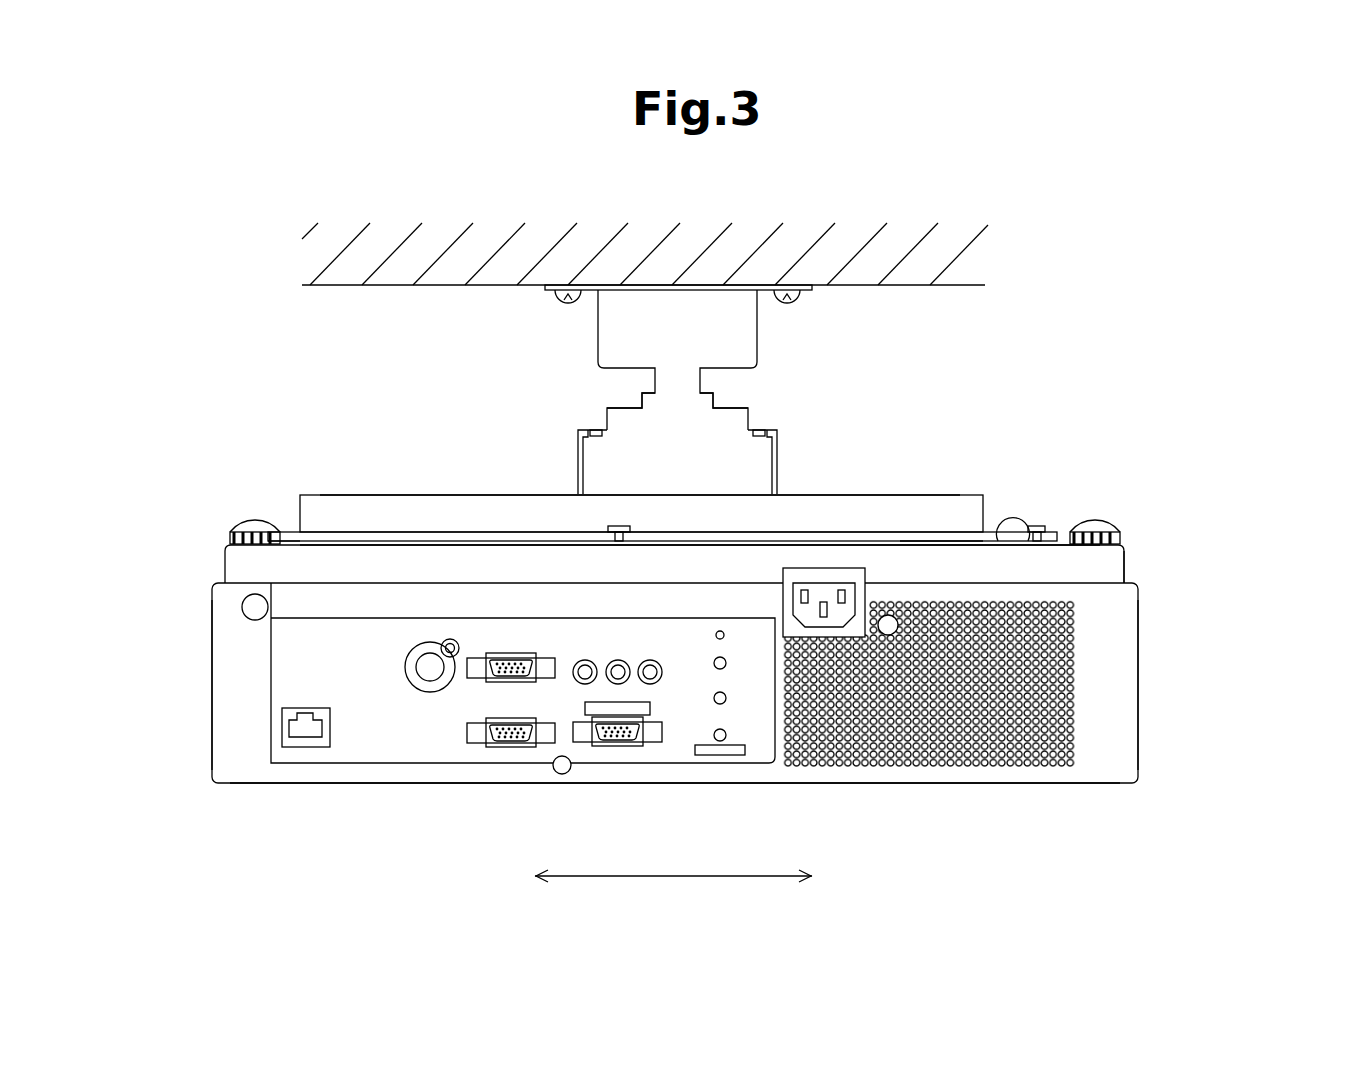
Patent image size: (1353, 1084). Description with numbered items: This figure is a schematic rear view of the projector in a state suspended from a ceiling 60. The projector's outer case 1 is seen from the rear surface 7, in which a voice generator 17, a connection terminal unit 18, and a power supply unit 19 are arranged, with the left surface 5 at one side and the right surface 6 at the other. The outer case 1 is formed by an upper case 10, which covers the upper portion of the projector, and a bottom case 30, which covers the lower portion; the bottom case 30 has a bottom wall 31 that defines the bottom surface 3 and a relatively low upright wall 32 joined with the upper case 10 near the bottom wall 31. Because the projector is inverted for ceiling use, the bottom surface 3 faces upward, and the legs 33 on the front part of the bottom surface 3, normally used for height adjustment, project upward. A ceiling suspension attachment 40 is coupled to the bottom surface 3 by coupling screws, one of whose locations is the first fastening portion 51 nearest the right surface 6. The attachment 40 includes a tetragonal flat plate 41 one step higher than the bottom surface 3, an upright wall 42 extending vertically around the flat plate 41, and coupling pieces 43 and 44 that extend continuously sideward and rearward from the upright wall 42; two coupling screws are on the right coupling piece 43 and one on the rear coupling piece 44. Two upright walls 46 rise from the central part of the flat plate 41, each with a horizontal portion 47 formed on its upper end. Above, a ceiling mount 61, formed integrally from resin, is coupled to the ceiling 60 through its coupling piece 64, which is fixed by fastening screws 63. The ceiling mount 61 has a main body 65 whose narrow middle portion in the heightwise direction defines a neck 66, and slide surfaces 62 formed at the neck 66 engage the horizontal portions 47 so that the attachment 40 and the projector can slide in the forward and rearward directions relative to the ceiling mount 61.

The outer case 1 is at (862, 794).
The bottom surface 3 is at (290, 538).
The left surface 5 is at (212, 641).
The right surface 6 is at (1139, 635).
The rear surface 7 is at (1050, 776).
The upper case 10 is at (1146, 718).
The voice generator 17 is at (943, 742).
The connection terminal unit 18 is at (668, 750).
The power supply unit 19 is at (832, 568).
The bottom case 30 is at (1200, 537).
The bottom wall 31 is at (1127, 547).
The upright wall 32 is at (1127, 570).
The legs 33 is at (240, 522).
The ceiling suspension attachment 40 is at (833, 491).
The flat plate 41 is at (462, 494).
The upright wall 42 is at (298, 532).
The coupling piece 43 is at (1048, 541).
The coupling piece 44 is at (945, 540).
The upright walls 46 is at (578, 462).
The horizontal portion 47 is at (596, 428).
The first fastening portion 51 is at (620, 525).
The ceiling 60 is at (960, 270).
The ceiling mount 61 is at (760, 348).
The slide surfaces 62 is at (762, 430).
The fastening screws 63 is at (800, 296).
The coupling piece 64 is at (558, 296).
The main body 65 is at (620, 402).
The neck 66 is at (702, 378).